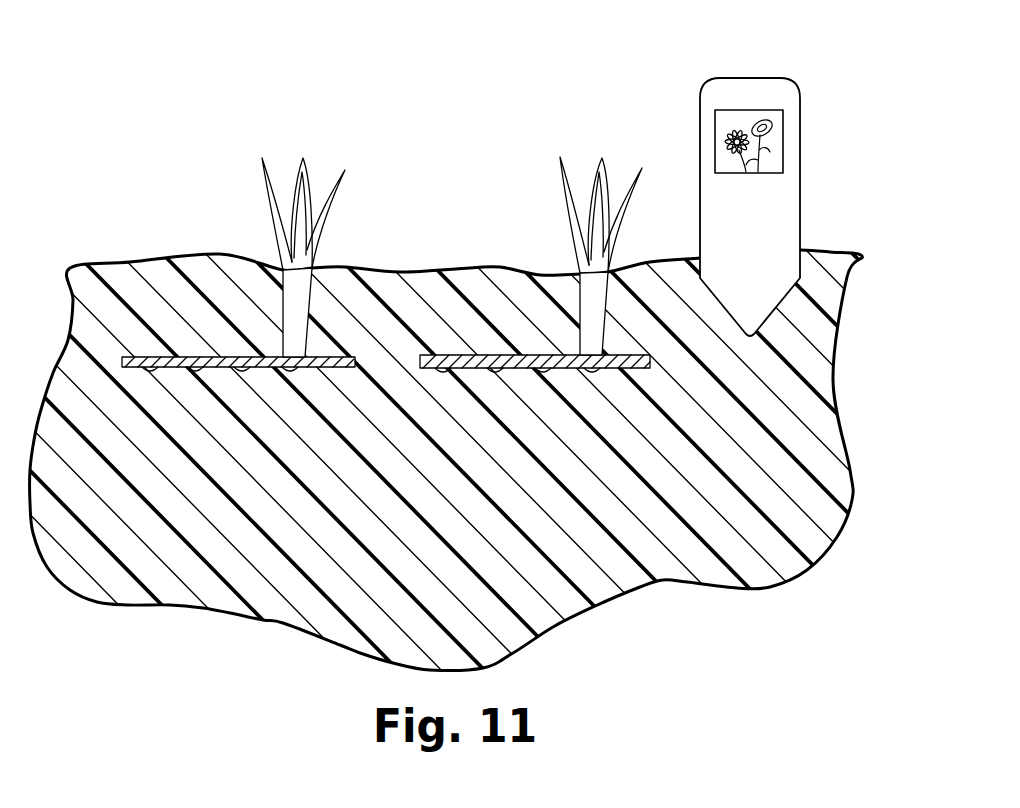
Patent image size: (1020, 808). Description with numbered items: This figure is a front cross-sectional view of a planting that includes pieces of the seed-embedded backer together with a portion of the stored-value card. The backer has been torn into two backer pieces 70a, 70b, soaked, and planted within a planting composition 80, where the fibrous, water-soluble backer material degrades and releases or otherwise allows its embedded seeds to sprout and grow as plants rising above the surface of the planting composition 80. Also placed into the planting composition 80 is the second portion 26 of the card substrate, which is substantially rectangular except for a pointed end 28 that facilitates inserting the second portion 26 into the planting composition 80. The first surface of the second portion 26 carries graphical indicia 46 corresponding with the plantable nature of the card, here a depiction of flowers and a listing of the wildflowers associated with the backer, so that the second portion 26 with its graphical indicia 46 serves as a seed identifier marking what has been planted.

The second portion 26 is at (786, 187).
The graphical indicia 46 is at (787, 156).
The pointed end 28 is at (762, 313).
The backer piece 70a is at (186, 356).
The backer piece 70b is at (488, 354).
The planting composition 80 is at (381, 306).